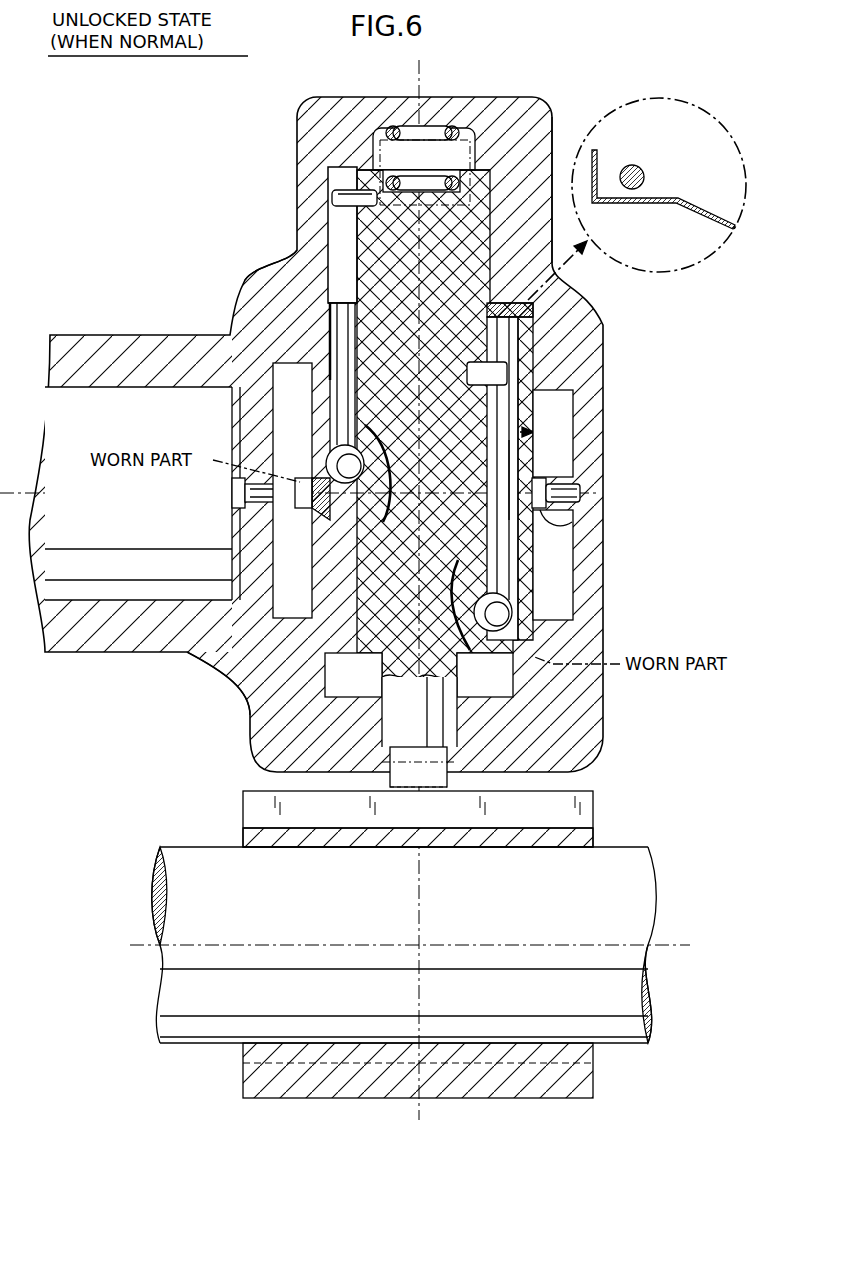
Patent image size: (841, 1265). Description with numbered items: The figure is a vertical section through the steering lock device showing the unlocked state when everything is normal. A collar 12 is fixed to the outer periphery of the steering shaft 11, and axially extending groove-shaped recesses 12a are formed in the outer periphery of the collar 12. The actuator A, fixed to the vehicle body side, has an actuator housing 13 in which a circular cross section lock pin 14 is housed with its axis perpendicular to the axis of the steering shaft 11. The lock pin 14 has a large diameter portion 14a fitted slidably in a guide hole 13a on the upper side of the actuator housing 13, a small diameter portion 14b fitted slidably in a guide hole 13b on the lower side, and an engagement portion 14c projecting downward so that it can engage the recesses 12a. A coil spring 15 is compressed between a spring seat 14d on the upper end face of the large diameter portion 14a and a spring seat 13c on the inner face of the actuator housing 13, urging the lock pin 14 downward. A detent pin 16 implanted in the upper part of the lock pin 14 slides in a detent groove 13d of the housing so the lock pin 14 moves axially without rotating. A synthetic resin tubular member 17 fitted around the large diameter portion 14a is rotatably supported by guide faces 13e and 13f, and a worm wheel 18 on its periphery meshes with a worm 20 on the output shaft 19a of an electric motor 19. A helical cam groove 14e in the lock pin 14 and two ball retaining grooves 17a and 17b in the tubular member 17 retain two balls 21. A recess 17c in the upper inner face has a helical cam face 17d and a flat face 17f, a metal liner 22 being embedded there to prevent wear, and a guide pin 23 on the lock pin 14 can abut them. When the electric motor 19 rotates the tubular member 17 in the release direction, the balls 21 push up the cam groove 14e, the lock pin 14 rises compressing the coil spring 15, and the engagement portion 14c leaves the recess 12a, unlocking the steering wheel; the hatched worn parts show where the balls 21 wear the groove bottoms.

The steering shaft 11 is at (208, 1036).
The collar 12 is at (590, 790).
The recess 12a is at (563, 827).
The actuator housing 13 is at (140, 660).
The guide hole 13a is at (478, 202).
The guide hole 13b is at (460, 726).
The spring seat 13c is at (460, 128).
The detent groove 13d is at (340, 241).
The guide face 13e is at (320, 300).
The guide face 13f is at (318, 665).
The lock pin 14 is at (490, 548).
The large diameter portion 14a is at (500, 292).
The small diameter portion 14b is at (385, 722).
The engagement portion 14c is at (412, 778).
The spring seat 14d is at (392, 175).
The helical cam groove 14e is at (363, 458).
The coil spring 15 is at (393, 127).
The detent pin 16 is at (331, 198).
The tubular member 17 is at (540, 432).
The ball retaining groove 17a is at (338, 405).
The ball retaining groove 17b is at (518, 528).
The recess 17c is at (495, 350).
The helical cam face 17d is at (508, 448).
The flat face 17f is at (518, 368).
The worm wheel 18 is at (552, 512).
The electric motor 19 is at (133, 504).
The output shaft 19a is at (258, 500).
The worm 20 is at (305, 506).
The ball 21 is at (334, 448).
The liner 22 is at (667, 198).
The guide pin 23 is at (478, 362).
The actuator A is at (282, 151).